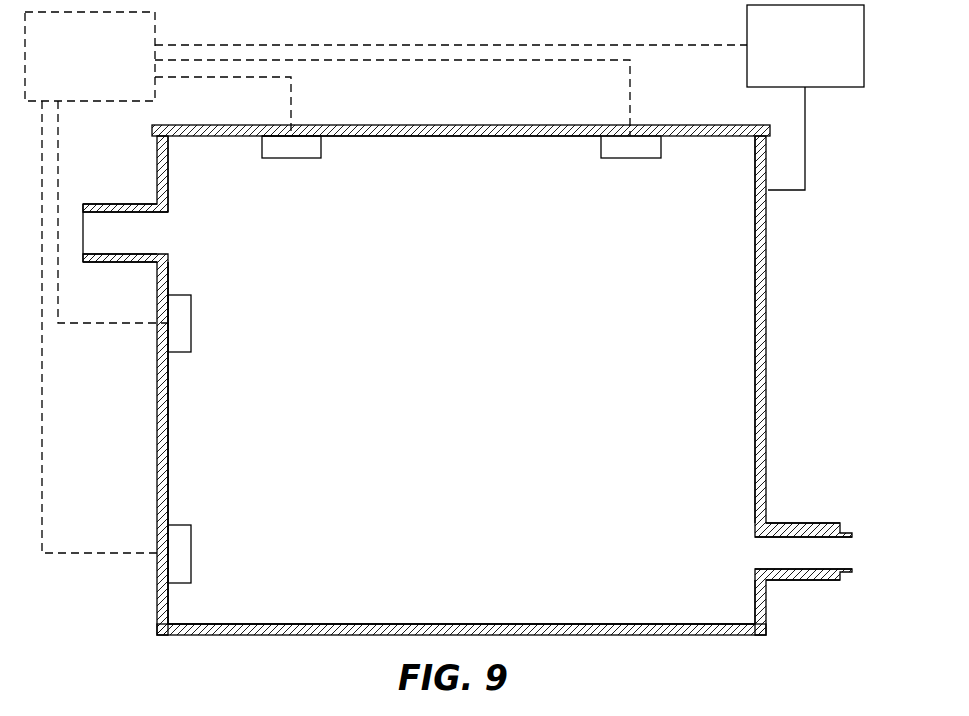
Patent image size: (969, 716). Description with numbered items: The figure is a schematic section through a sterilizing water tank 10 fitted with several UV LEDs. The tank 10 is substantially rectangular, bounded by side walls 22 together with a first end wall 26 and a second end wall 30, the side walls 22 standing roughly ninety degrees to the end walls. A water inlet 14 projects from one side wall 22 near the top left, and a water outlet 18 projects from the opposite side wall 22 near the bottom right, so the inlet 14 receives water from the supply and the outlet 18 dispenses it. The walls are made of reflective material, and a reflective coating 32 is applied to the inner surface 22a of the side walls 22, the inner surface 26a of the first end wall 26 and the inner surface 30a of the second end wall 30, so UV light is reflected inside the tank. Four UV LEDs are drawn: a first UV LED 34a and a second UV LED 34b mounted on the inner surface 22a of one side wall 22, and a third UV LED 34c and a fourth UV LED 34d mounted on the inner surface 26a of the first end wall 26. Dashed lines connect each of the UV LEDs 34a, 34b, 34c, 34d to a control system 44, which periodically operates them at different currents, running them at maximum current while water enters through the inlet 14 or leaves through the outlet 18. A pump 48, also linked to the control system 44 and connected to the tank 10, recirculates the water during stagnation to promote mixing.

The water tank 10 is at (846, 296).
The water inlet 14 is at (118, 204).
The water outlet 18 is at (808, 523).
The side walls 22 is at (768, 277).
The inner surface of the side walls 22a is at (160, 396).
The first end wall 26 is at (575, 125).
The inner surface of the first end wall 26a is at (408, 136).
The second end wall 30 is at (298, 638).
The inner surface of the second end wall 30a is at (592, 615).
The reflective coating 32 is at (531, 141).
The first UV LED 34a is at (182, 313).
The second UV LED 34b is at (182, 543).
The third UV LED 34c is at (300, 150).
The fourth UV LED 34d is at (636, 147).
The control system 44 is at (78, 70).
The pump 48 is at (793, 59).